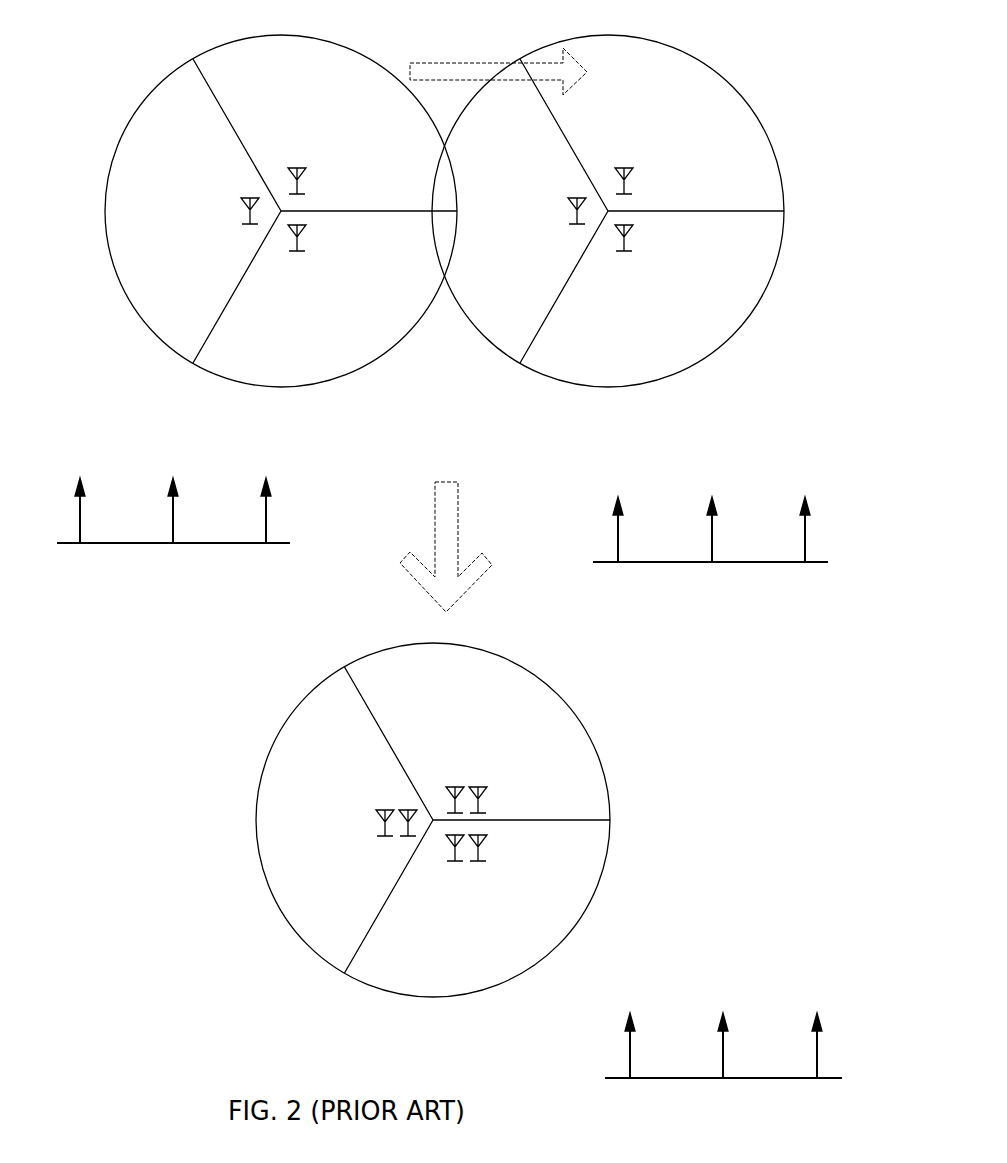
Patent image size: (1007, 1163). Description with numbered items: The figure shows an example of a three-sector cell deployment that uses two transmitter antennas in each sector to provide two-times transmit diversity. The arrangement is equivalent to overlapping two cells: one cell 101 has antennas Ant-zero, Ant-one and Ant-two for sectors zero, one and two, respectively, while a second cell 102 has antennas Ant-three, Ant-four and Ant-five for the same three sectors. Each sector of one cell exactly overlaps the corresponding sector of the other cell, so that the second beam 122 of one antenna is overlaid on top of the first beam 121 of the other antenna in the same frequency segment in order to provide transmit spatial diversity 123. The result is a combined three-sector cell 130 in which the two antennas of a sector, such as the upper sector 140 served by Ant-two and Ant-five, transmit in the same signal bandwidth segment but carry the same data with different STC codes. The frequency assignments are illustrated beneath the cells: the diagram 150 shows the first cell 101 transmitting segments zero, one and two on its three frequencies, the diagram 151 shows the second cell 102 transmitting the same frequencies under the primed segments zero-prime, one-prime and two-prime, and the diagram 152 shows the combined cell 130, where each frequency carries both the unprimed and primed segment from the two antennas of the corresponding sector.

The first cell 101 is at (655, 211).
The second cell 102 is at (278, 202).
The first beam 121 is at (633, 170).
The second beam 122 is at (293, 170).
The transmit spatial diversity 123 is at (488, 787).
The combined cell 130 is at (489, 820).
The sector 2 of combined cell 140 is at (545, 740).
The frequency allocation of first cell 150 is at (807, 540).
The frequency allocation of second cell 151 is at (268, 525).
The frequency allocation of combined cell 152 is at (820, 1055).